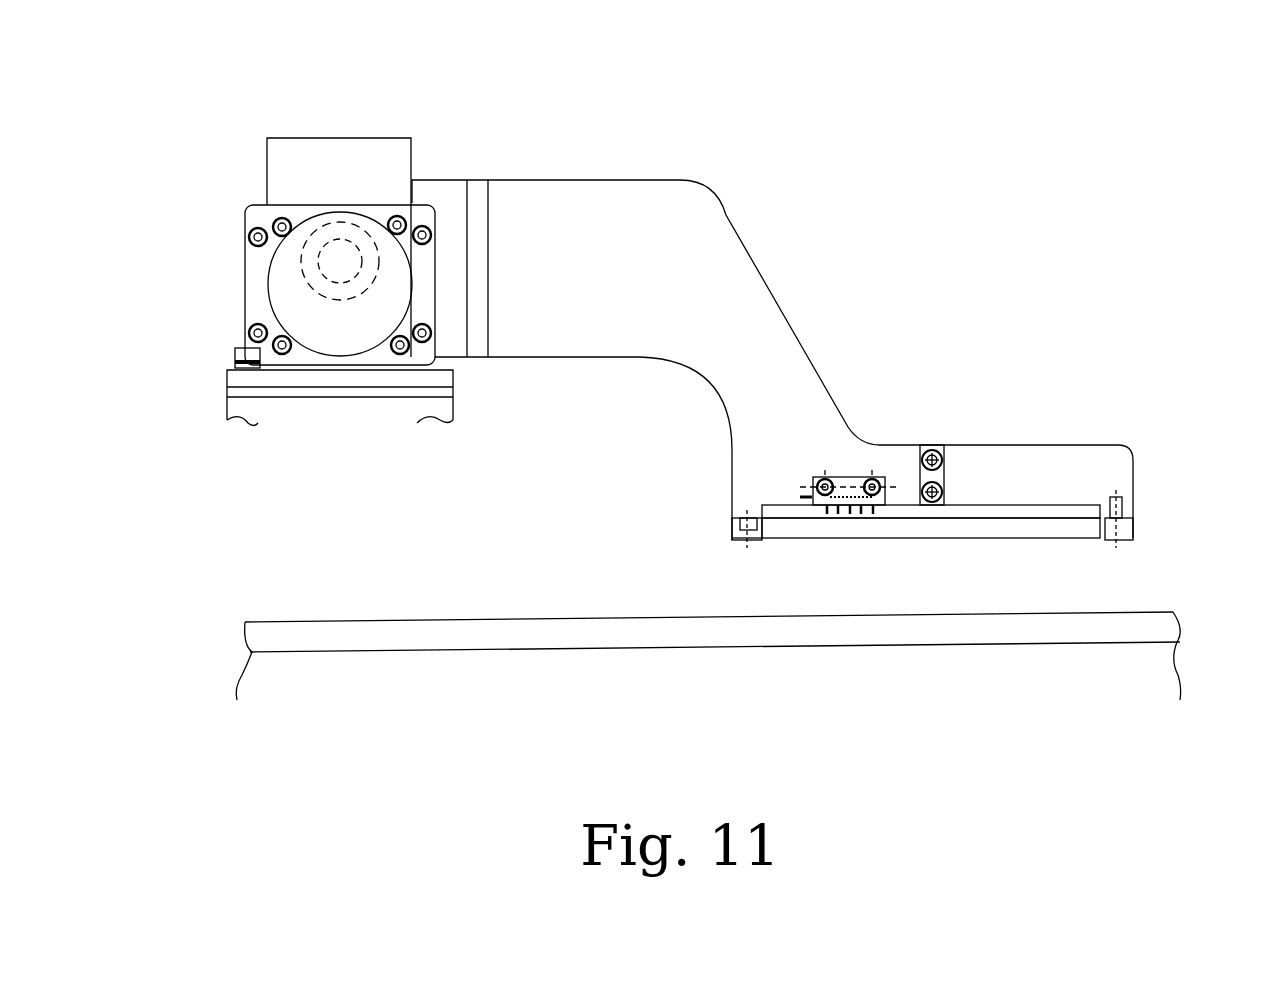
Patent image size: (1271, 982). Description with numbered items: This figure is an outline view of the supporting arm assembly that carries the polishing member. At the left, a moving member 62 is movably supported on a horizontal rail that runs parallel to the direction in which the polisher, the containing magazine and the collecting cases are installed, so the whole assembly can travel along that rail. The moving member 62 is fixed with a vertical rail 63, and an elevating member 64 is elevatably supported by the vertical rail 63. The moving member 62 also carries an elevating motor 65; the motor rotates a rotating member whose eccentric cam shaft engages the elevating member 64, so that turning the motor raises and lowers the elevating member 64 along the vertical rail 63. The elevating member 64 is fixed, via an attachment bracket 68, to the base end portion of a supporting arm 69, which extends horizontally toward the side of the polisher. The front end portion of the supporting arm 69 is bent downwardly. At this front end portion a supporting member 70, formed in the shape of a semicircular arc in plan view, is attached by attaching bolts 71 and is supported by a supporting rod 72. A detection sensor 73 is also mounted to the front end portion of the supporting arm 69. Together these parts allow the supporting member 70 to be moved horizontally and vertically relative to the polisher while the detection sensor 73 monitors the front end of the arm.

The moving member 62 is at (250, 377).
The vertical rail 63 is at (320, 175).
The elevating member 64 is at (386, 210).
The elevating motor 65 is at (293, 272).
The attachment bracket 68 is at (480, 193).
The supporting arm 69 is at (730, 263).
The supporting member 70 is at (1040, 522).
The attaching bolts 71 is at (735, 530).
The supporting rod 72 is at (948, 503).
The detection sensor 73 is at (852, 478).